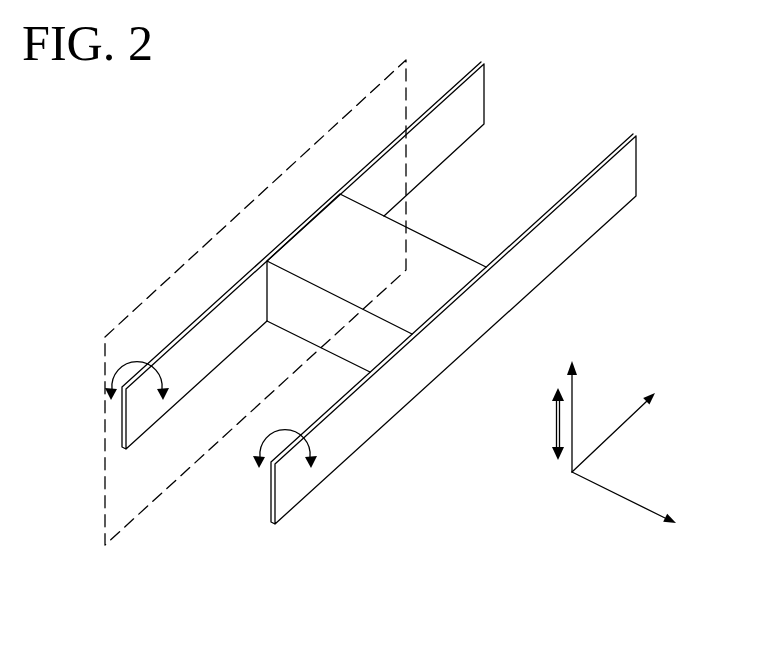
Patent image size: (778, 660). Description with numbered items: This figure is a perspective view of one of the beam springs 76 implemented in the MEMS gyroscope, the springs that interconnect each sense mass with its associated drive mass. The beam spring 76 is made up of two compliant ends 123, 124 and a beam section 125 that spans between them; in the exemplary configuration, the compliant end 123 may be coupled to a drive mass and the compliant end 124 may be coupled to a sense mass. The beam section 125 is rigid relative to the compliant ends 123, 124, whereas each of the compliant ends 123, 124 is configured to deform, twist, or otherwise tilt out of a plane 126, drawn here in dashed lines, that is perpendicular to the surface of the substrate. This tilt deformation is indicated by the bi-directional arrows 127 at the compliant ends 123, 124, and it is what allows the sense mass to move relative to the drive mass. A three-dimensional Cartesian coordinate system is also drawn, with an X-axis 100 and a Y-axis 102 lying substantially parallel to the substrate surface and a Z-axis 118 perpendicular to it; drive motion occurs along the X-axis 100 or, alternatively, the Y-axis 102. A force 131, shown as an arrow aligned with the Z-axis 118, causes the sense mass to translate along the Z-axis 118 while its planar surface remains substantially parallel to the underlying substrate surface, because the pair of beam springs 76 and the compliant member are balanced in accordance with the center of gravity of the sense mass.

The beam spring 76 is at (398, 301).
The compliant end 123 is at (460, 117).
The compliant end 124 is at (613, 192).
The beam section 125 is at (436, 258).
The plane 126 is at (104, 482).
The bi-directional arrows 127 is at (134, 360).
The X-axis 100 is at (627, 425).
The Y-axis 102 is at (626, 500).
The Z-axis 118 is at (574, 392).
The force 131 is at (553, 427).